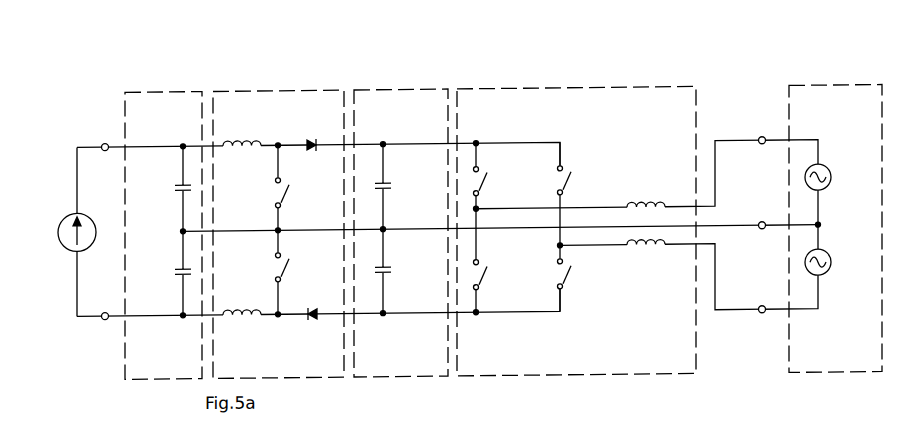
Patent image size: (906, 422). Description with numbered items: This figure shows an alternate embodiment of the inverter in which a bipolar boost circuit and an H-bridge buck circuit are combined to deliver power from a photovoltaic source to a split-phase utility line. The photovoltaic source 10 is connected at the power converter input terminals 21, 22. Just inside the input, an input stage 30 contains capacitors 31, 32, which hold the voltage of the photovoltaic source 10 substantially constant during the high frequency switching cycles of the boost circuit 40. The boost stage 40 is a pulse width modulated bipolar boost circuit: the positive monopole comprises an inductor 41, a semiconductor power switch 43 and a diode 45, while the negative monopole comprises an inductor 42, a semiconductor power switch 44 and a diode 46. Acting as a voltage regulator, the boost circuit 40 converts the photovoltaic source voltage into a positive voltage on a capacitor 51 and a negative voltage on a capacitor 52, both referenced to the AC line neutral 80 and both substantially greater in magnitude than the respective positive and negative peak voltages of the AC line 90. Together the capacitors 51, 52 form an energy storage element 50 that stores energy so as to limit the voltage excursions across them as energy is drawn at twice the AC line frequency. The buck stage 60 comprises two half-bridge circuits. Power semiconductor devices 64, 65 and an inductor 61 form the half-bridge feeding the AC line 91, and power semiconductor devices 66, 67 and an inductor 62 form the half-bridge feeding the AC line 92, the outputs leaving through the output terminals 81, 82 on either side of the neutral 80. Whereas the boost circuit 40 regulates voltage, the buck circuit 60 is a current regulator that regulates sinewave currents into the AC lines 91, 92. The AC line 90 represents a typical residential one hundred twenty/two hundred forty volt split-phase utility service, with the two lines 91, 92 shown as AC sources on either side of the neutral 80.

The photovoltaic source 10 is at (58, 226).
The power converter input terminal 21 is at (106, 139).
The power converter input terminal 22 is at (104, 317).
The input capacitor stage 30 is at (173, 88).
The capacitor 31 is at (174, 185).
The capacitor 32 is at (174, 269).
The boost circuit 40 is at (270, 88).
The inductor 41 is at (242, 138).
The inductor 42 is at (242, 315).
The semiconductor power switch 43 is at (287, 192).
The semiconductor power switch 44 is at (287, 267).
The diode 45 is at (313, 138).
The diode 46 is at (313, 317).
The energy storage element 50 is at (401, 88).
The capacitor 51 is at (392, 185).
The capacitor 52 is at (392, 269).
The buck stage 60 is at (573, 88).
The inductor 61 is at (644, 204).
The inductor 62 is at (646, 251).
The power semiconductor device 64 is at (485, 183).
The power semiconductor device 65 is at (485, 277).
The power semiconductor device 66 is at (571, 184).
The power semiconductor device 67 is at (571, 278).
The AC line neutral 80 is at (762, 224).
The output terminal 81 is at (762, 139).
The output terminal 82 is at (762, 317).
The AC line 90 is at (835, 88).
The AC line 91 is at (830, 187).
The AC line 92 is at (830, 271).